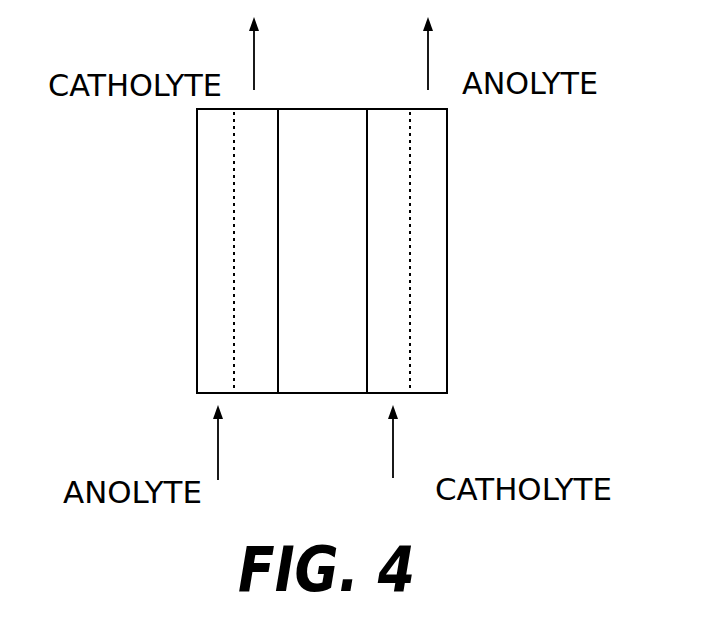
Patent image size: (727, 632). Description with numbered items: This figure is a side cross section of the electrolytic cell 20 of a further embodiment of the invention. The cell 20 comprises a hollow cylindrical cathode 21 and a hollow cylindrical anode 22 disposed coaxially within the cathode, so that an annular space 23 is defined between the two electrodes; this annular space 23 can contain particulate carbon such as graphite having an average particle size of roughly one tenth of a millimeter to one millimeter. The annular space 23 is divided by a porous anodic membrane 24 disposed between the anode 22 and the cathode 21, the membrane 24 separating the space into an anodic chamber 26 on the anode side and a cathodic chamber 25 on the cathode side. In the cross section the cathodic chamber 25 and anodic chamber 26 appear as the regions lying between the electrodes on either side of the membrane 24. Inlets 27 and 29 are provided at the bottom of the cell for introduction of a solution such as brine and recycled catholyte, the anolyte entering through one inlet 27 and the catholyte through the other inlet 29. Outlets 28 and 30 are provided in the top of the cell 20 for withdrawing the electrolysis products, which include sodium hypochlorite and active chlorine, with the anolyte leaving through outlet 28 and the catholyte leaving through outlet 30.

The cell 20 is at (317, 95).
The hollow cylindrical cathode 21 is at (447, 203).
The hollow cylindrical anode 22 is at (367, 340).
The annular space 23 is at (218, 270).
The porous anodic membrane 24 is at (234, 190).
The cathodic chamber 25 is at (213, 347).
The anodic chamber 26 is at (398, 275).
The inlet 27 is at (218, 450).
The outlet 28 is at (428, 60).
The inlet 29 is at (393, 447).
The outlet 30 is at (254, 60).